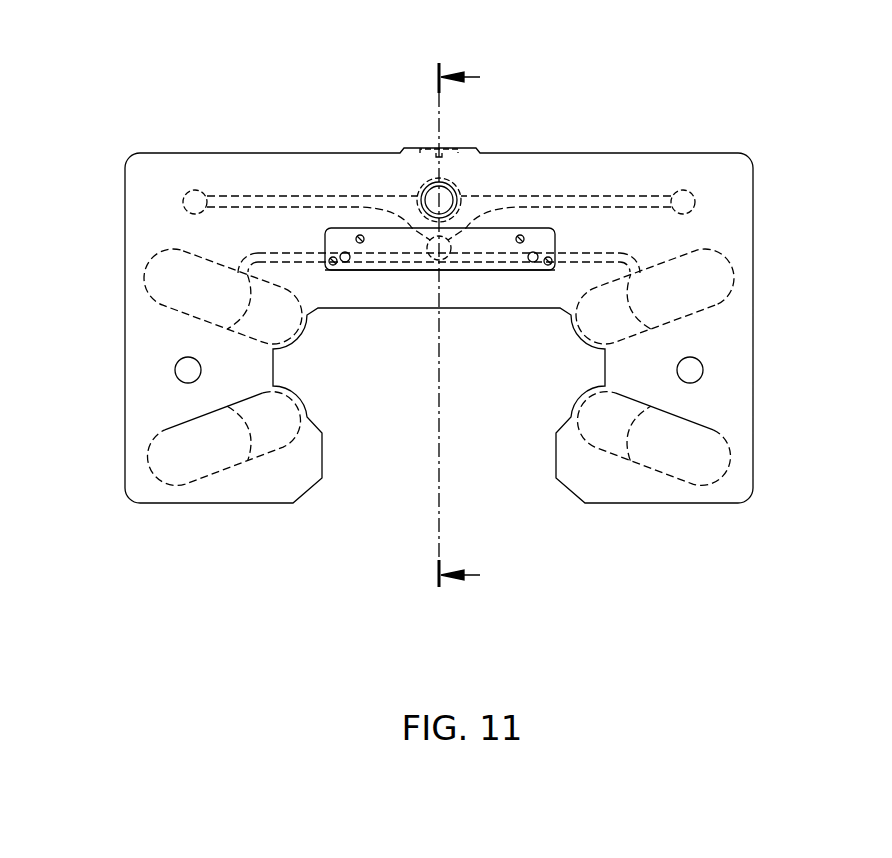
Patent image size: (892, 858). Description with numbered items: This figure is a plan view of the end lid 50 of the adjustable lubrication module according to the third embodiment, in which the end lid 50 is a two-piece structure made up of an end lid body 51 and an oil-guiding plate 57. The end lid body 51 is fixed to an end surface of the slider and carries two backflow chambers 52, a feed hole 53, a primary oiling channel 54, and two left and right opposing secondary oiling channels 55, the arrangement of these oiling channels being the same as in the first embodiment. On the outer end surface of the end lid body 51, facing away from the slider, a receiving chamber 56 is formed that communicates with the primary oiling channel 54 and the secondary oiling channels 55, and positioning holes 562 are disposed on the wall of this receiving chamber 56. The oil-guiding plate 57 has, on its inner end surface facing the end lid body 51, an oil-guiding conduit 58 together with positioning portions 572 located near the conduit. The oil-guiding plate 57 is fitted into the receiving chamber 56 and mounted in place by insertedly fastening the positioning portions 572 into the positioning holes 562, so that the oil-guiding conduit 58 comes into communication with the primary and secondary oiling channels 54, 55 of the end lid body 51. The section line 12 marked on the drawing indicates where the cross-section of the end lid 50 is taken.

The section line 12- 12 is at (459, 310).
The end lid 50 is at (730, 57).
The end lid body 51 is at (695, 163).
The backflow chambers 52 is at (157, 258).
The feed hole 53 is at (430, 197).
The primary oiling channel 54 is at (428, 238).
The secondary oiling channels 55 is at (267, 250).
The receiving chamber 56 is at (538, 228).
The oil-guiding plate 57 is at (552, 238).
The oil-guiding conduit 58 is at (411, 270).
The positioning holes 562 is at (387, 125).
The positioning portions 572 is at (520, 239).